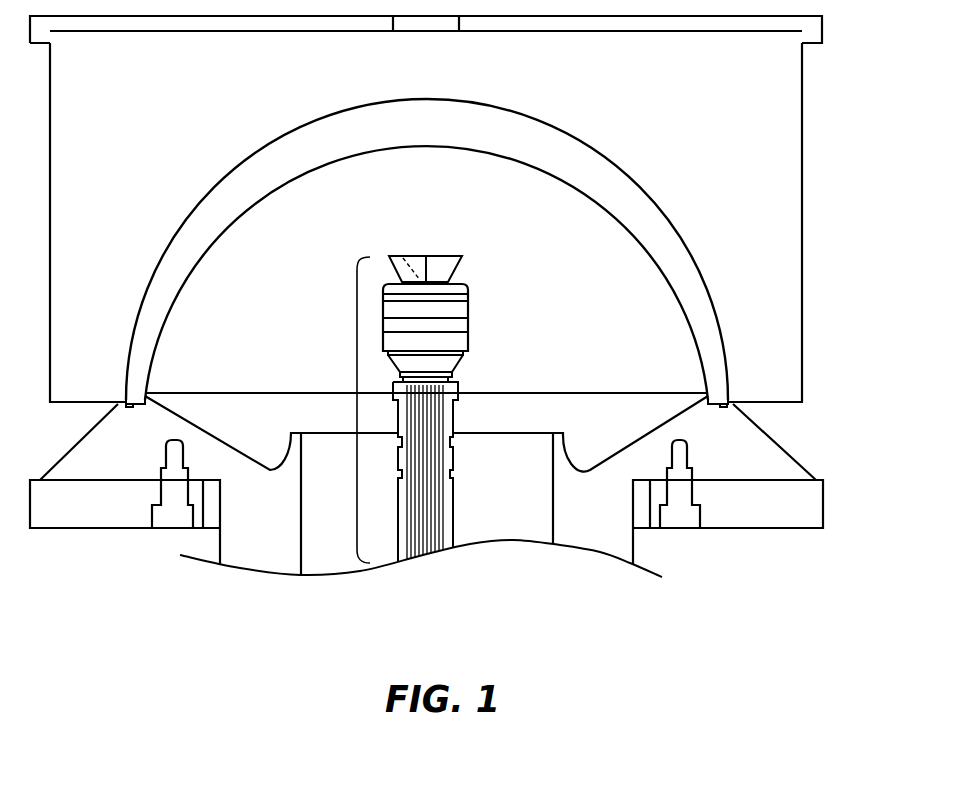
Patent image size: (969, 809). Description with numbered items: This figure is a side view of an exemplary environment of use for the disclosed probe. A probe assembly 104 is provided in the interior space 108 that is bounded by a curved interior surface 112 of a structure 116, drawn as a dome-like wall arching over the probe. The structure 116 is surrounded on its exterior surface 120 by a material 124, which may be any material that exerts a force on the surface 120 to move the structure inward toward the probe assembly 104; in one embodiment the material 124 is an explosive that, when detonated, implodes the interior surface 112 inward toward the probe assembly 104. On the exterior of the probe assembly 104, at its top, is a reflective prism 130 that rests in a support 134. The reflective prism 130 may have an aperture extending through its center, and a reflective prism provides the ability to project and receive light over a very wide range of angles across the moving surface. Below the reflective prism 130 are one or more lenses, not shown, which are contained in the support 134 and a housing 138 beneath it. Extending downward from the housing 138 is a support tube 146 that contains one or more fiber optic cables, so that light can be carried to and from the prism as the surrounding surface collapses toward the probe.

The probe assembly 104 is at (357, 418).
The interior space 108 is at (643, 273).
The curved interior surface 112 is at (639, 195).
The structure 116 is at (561, 149).
The exterior surface 120 is at (482, 104).
The material 124 is at (770, 126).
The reflective prism 130 is at (444, 255).
The support 134 is at (470, 322).
The housing 138 is at (458, 383).
The support tube 146 is at (442, 543).